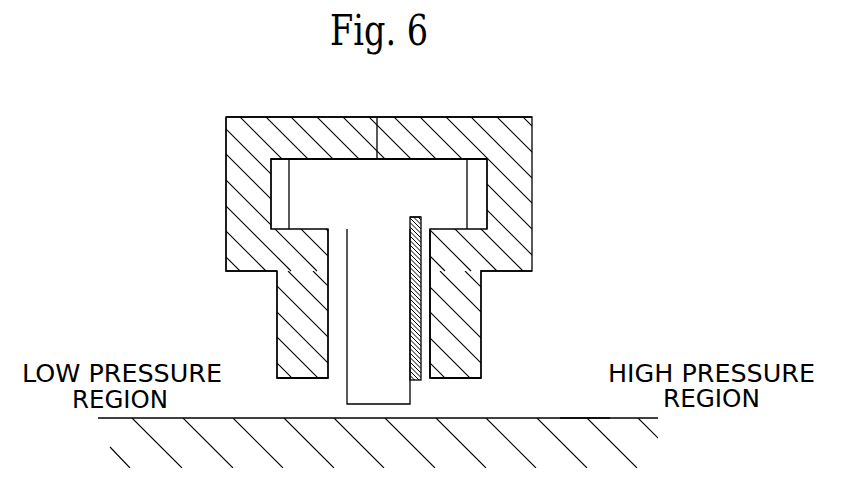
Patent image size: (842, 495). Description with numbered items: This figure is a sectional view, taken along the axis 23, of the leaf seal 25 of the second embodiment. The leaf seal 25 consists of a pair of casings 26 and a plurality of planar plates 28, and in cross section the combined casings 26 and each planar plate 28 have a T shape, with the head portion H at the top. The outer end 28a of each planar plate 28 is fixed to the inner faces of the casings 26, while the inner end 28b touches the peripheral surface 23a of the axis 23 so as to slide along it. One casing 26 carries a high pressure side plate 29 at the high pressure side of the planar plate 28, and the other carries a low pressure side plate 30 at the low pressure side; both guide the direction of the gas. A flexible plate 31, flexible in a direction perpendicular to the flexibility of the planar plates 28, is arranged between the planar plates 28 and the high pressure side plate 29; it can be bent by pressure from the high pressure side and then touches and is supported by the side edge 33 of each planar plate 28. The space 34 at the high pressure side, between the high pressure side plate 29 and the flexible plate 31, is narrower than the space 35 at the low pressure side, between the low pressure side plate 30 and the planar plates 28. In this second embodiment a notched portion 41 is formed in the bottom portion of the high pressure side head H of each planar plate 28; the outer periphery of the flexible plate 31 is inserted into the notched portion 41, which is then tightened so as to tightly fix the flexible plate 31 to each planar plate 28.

The leaf seal 25 is at (553, 118).
The casings 26 is at (307, 128).
The head portion H is at (452, 174).
The planar plate 28 is at (352, 297).
The outer end 28a is at (305, 172).
The inner end 28b is at (365, 395).
The high pressure side plate 29 is at (460, 323).
The low pressure side plate 30 is at (290, 343).
The flexible plate 31 is at (432, 312).
The side edge 33 is at (410, 247).
The space at the high pressure side 34 is at (424, 378).
The space at the low pressure side 35 is at (333, 378).
The notched portion 41 is at (417, 217).
The axis 23 is at (573, 462).
The peripheral surface 23a is at (585, 418).